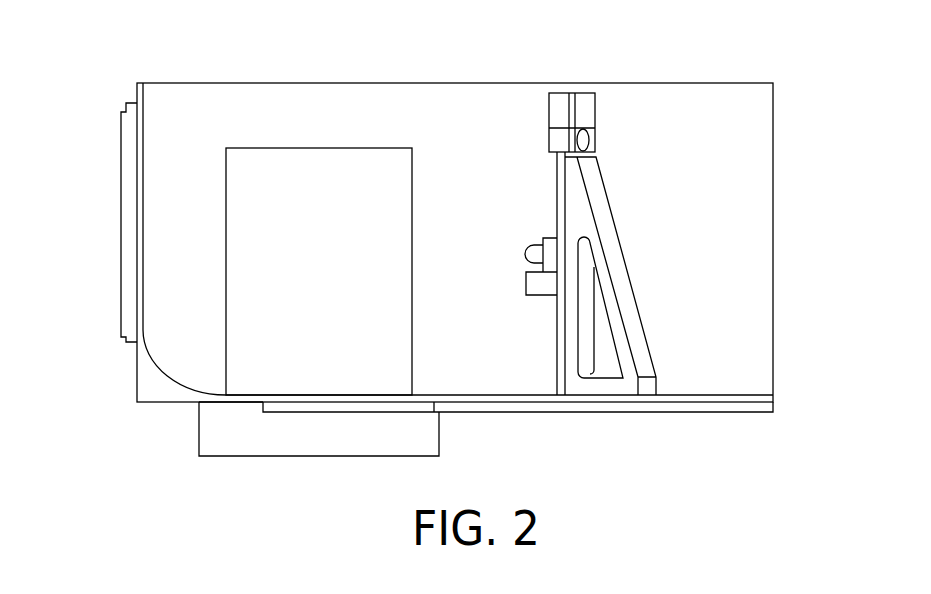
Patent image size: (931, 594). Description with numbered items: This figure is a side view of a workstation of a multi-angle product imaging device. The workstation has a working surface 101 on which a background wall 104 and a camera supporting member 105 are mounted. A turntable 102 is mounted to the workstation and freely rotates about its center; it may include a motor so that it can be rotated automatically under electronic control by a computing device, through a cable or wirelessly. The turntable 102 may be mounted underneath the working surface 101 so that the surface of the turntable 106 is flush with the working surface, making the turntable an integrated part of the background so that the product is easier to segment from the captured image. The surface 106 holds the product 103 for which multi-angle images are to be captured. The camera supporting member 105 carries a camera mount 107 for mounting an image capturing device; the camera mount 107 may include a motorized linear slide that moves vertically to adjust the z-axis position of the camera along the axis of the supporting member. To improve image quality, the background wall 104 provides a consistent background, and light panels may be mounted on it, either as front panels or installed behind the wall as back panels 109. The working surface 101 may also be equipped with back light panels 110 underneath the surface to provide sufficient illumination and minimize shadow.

The working surface 101 is at (727, 393).
The turntable 102 is at (320, 443).
The product 103 is at (315, 180).
The background wall 104 is at (465, 137).
The camera supporting member 105 is at (623, 267).
The surface of the turntable 106 is at (233, 402).
The camera mount 107 is at (583, 112).
The back panels 109 is at (121, 236).
The back light panels 110 is at (682, 413).